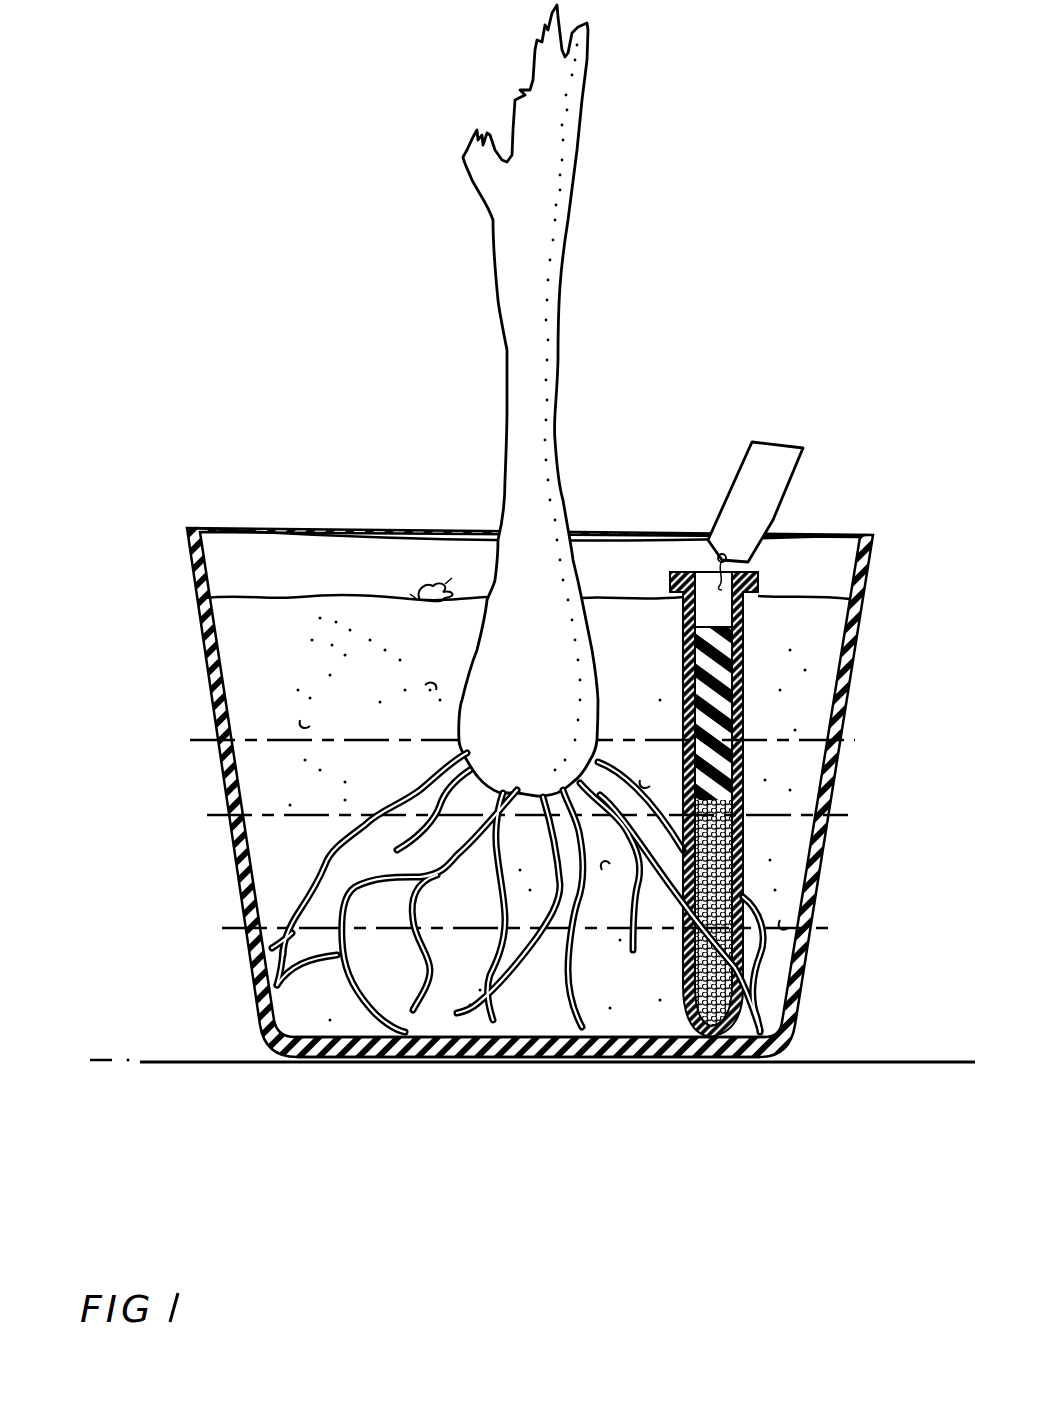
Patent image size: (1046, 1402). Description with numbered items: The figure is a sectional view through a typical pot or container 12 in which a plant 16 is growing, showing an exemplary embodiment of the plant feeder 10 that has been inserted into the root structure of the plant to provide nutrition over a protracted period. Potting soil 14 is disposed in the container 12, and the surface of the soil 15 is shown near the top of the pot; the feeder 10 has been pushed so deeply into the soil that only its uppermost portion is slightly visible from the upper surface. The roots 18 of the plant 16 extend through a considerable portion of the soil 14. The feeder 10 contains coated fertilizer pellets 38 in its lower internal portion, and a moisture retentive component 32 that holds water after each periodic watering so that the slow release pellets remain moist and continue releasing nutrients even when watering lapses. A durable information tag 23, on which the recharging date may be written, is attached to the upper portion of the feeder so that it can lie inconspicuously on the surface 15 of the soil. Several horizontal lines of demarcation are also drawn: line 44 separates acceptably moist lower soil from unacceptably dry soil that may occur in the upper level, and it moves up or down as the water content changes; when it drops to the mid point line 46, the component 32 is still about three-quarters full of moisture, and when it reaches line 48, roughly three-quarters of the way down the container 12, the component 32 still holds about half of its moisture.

The plant feeder 10 is at (774, 840).
The pot or container 12 is at (528, 792).
The potting soil 14 is at (262, 850).
The surface of the soil 15 is at (305, 616).
The plant 16 is at (513, 410).
The roots 18 is at (262, 992).
The information tag 23 is at (805, 446).
The moisture retentive component 32 is at (730, 840).
The fertilizer pellets 38 is at (718, 1012).
The line of demarcation 44 is at (805, 733).
The line of demarcation at mid point 46 is at (815, 797).
The line of demarcation at three-quarters depth 48 is at (812, 908).